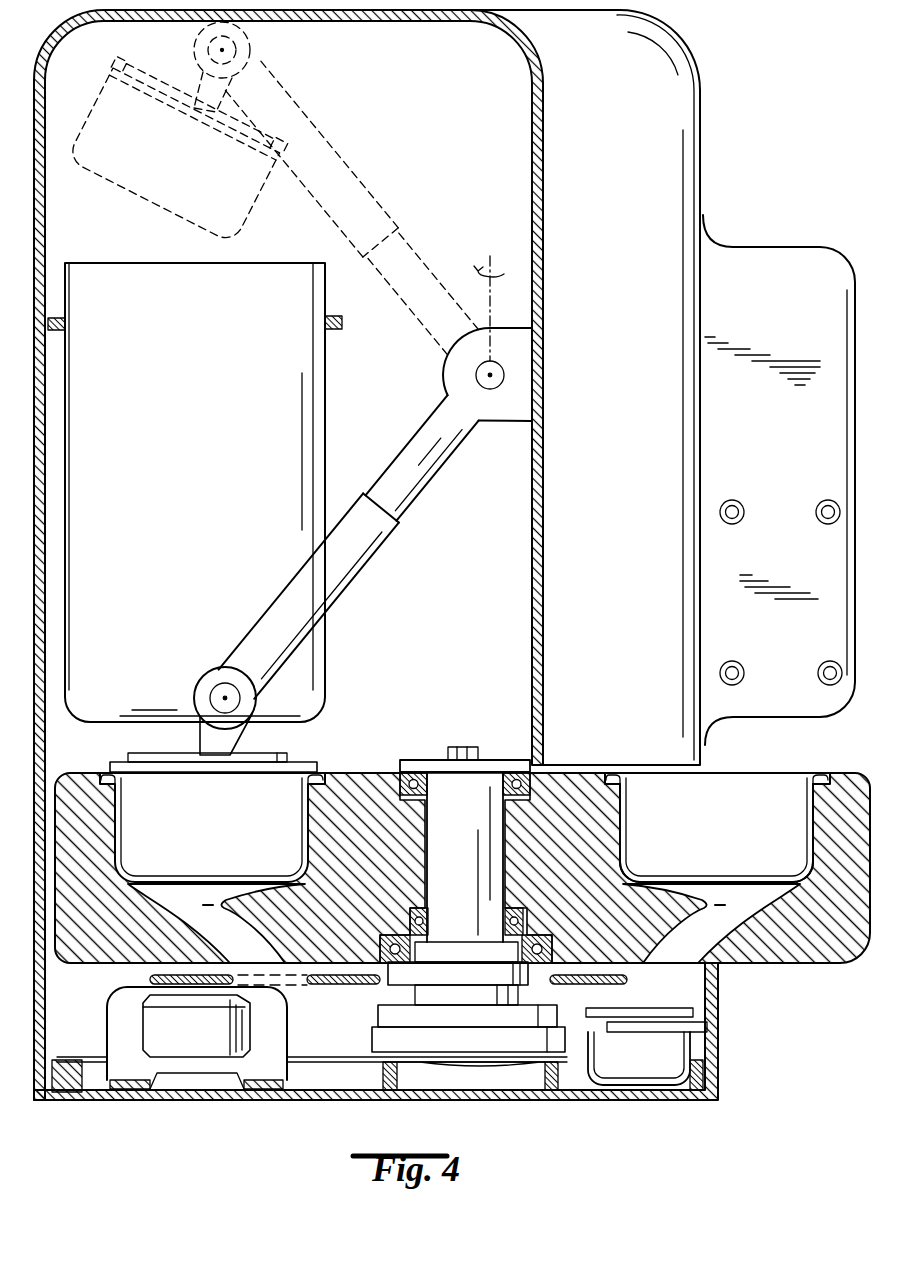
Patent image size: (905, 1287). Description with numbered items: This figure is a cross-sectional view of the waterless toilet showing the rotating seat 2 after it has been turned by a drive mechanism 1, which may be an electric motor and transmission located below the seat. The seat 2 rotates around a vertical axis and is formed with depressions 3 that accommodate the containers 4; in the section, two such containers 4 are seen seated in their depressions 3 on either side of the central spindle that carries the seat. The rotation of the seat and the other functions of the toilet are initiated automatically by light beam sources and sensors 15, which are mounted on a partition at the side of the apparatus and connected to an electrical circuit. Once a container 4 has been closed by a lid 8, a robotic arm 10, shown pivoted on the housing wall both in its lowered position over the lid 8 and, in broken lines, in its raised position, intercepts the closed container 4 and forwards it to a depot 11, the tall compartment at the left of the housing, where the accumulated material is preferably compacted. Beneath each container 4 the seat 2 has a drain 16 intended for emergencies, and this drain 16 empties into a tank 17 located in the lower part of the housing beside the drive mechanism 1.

The drive mechanism 1 is at (177, 1033).
The rotating seat 2 is at (792, 952).
The depressions 3 is at (768, 887).
The containers 4 is at (189, 880).
The lid 8 is at (278, 749).
The robotic arm 10 is at (352, 563).
The depot 11 is at (316, 428).
The light beam sources and sensors 15 is at (819, 505).
The drain 16 is at (697, 936).
The tank 17 is at (642, 1067).